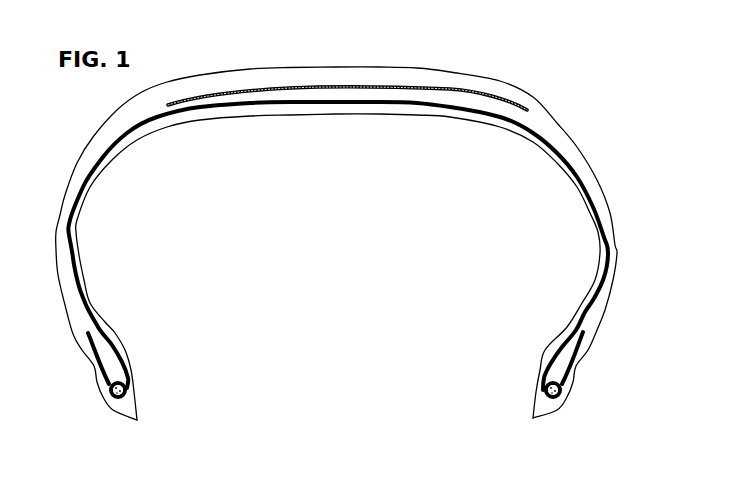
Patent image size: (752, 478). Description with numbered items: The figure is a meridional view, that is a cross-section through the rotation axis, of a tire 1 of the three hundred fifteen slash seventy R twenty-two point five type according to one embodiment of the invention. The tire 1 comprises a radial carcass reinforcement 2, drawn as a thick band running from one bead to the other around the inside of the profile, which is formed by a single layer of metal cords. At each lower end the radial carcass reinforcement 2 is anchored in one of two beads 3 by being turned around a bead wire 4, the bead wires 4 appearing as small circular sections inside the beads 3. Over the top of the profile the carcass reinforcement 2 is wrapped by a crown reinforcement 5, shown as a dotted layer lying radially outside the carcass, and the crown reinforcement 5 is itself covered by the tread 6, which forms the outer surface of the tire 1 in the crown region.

The tire 1 is at (518, 48).
The radial carcass reinforcement 2 is at (73, 255).
The beads 3 is at (130, 408).
The bead wires 4 is at (122, 387).
The crown reinforcement 5 is at (217, 97).
The tread 6 is at (290, 67).